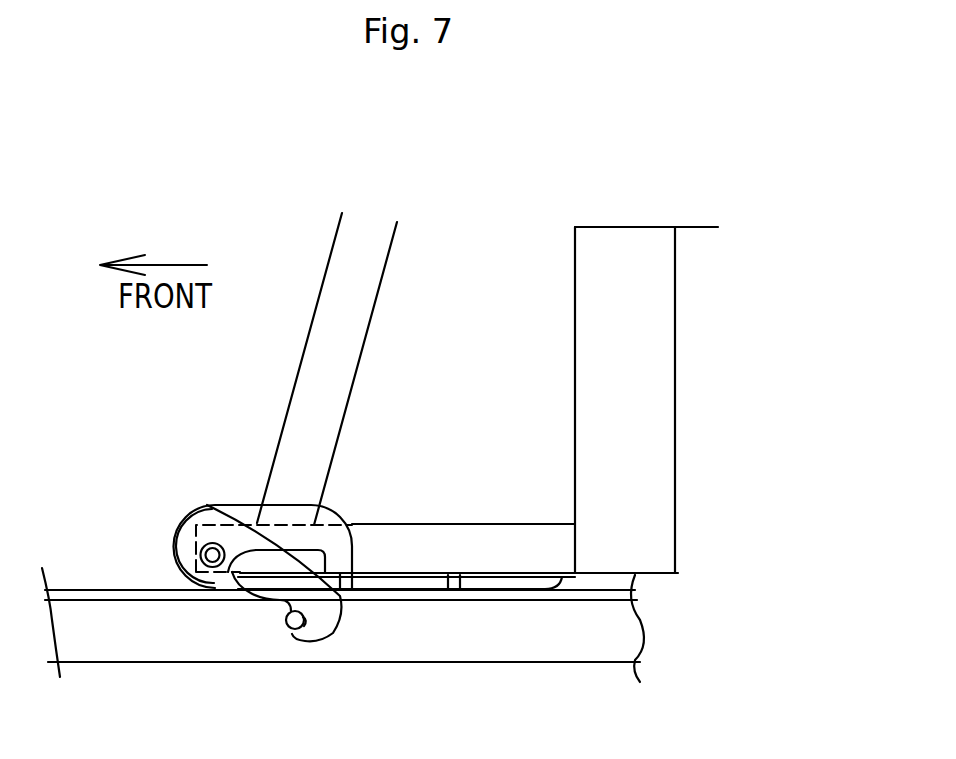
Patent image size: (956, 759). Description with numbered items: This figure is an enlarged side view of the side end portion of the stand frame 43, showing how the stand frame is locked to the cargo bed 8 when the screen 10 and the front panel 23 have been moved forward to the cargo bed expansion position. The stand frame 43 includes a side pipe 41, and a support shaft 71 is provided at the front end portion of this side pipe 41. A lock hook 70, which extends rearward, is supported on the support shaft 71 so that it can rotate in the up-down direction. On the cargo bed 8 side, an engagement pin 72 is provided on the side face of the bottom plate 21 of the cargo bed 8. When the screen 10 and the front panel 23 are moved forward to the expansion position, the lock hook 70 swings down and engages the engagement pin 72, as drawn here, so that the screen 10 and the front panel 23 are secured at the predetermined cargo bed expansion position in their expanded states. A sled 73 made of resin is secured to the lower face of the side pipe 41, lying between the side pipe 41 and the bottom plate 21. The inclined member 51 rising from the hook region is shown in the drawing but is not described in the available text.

The cargo bed 8 is at (718, 178).
The screen 10 is at (704, 400).
The front panel 23 is at (630, 450).
The bottom plate 21 is at (550, 632).
The side pipe 41 is at (433, 550).
The stand frame 43 is at (513, 510).
The seat back rod 51 is at (328, 356).
The lock hook 70 is at (285, 512).
The support shaft 71 is at (200, 560).
The engagement pin 72 is at (287, 621).
The sled 73 is at (402, 578).